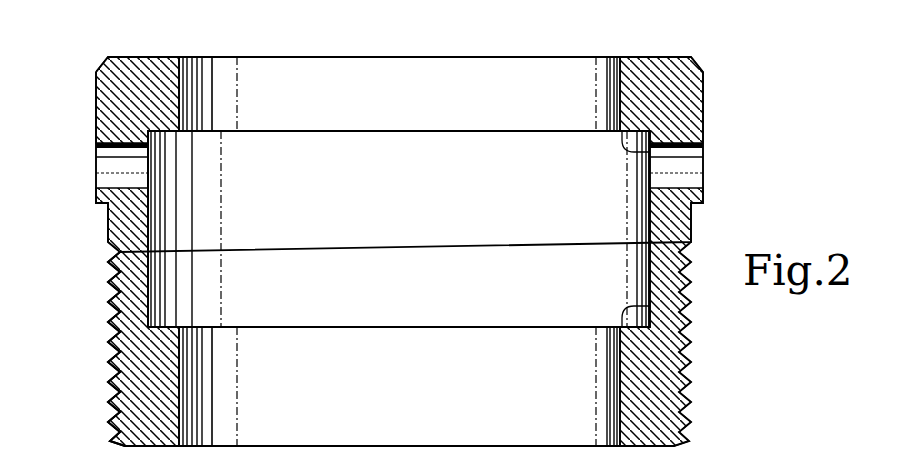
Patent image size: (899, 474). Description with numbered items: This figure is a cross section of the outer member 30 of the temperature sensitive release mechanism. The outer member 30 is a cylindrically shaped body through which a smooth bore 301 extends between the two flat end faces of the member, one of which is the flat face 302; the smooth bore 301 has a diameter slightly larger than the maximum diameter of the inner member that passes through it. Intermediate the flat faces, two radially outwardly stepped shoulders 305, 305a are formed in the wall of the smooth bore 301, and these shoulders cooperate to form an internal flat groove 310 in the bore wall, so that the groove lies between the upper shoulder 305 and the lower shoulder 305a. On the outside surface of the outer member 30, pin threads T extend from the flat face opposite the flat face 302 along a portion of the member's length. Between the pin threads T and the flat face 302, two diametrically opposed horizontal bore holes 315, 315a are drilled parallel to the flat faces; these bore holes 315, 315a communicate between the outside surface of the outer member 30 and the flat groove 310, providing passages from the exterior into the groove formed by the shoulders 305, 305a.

The outer member 30 is at (106, 228).
The pin threads T is at (112, 293).
The flat face 302 is at (662, 57).
The internal flat groove 310 is at (655, 213).
The horizontal bore hole 315 is at (690, 182).
The horizontal bore hole 315a is at (118, 185).
The radially outwardly stepped shoulder 305 is at (645, 152).
The radially outwardly stepped shoulder 305a is at (640, 303).
The smooth bore 301 is at (605, 380).